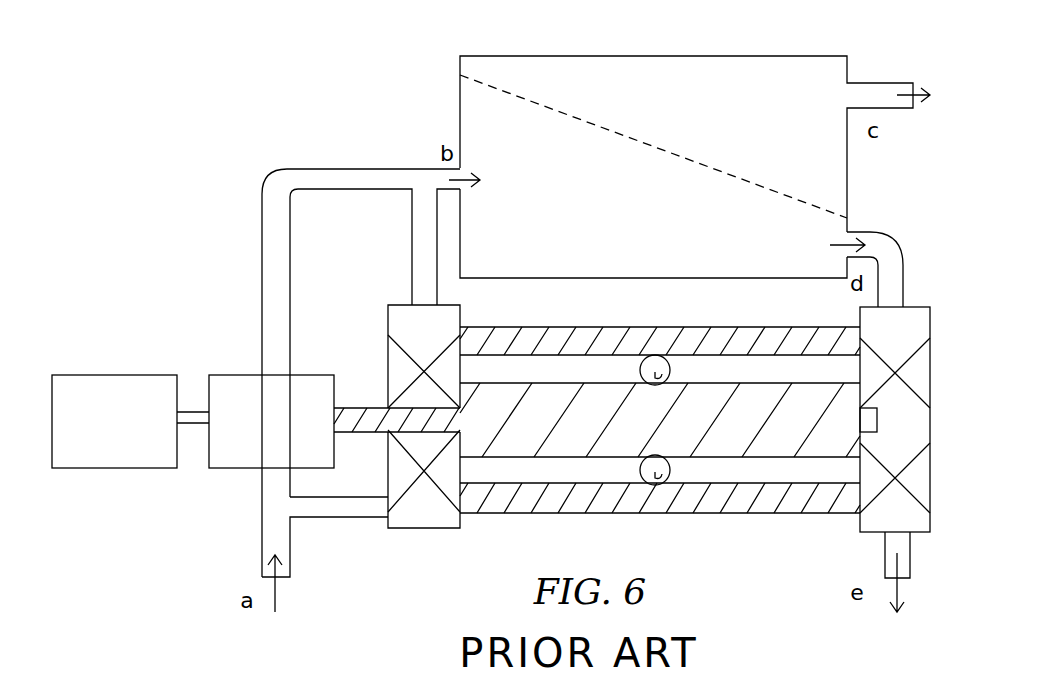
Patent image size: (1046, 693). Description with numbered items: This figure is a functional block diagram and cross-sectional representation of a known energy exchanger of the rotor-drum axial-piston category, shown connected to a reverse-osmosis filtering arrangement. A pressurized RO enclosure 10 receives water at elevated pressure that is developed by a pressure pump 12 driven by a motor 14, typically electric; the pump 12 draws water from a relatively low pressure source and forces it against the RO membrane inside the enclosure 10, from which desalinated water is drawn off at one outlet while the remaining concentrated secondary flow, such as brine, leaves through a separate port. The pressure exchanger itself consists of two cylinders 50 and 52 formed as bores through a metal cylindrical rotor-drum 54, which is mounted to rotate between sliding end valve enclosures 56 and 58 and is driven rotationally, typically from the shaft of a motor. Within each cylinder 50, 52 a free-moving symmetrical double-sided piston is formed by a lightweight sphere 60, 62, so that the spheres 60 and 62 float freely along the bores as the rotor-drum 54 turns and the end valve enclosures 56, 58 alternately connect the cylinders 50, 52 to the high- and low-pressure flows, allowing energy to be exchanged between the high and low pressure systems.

The RO enclosure 10 is at (847, 178).
The pressure pump 12 is at (253, 429).
The motor 14 is at (100, 433).
The cylinder 50 is at (580, 370).
The cylinder 52 is at (578, 463).
The rotor-drum 54 is at (633, 505).
The sliding end valve enclosure 56 is at (423, 518).
The sliding end valve enclosure 58 is at (877, 515).
The lightweight sphere 60 is at (652, 358).
The lightweight sphere 62 is at (656, 486).